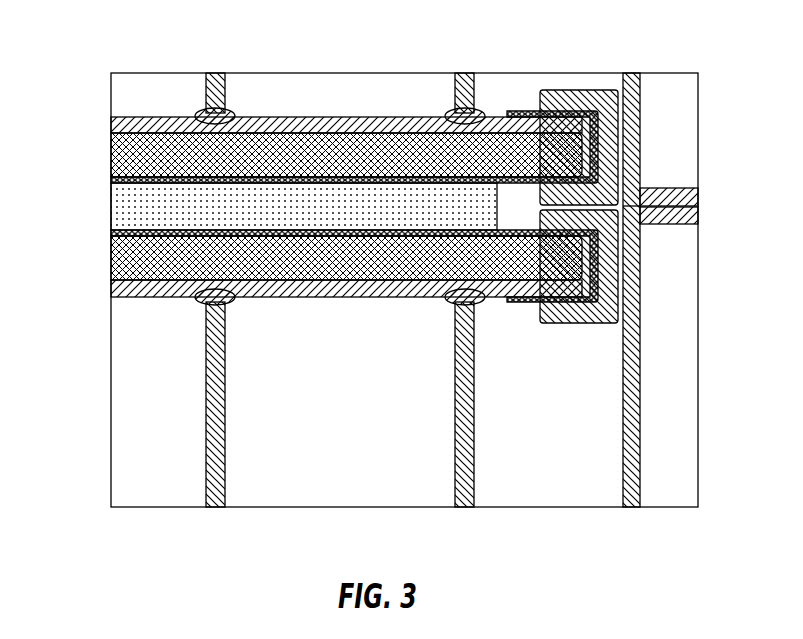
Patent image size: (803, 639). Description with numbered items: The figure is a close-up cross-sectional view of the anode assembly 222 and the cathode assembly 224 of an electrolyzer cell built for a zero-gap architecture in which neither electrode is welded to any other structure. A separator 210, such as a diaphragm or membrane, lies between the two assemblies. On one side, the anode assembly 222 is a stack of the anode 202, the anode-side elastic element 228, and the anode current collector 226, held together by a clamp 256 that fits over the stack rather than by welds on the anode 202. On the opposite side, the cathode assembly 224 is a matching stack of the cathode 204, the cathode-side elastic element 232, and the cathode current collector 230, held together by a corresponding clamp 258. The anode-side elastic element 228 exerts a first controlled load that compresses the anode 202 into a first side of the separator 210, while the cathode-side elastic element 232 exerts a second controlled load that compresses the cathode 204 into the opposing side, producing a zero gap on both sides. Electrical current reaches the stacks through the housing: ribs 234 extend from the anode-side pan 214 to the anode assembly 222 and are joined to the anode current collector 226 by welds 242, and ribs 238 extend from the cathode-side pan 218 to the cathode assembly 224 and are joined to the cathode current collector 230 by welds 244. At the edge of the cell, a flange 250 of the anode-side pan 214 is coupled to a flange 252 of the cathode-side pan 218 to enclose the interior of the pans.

The anode 202 is at (362, 170).
The cathode 204 is at (340, 237).
The separator 210 is at (112, 210).
The anode-side pan 214 is at (633, 88).
The cathode-side pan 218 is at (622, 446).
The anode assembly 222 is at (322, 131).
The cathode assembly 224 is at (322, 297).
The anode current collector 226 is at (166, 127).
The anode-side elastic element 228 is at (405, 150).
The cathode current collector 230 is at (143, 288).
The cathode-side elastic element 232 is at (283, 258).
The ribs 234 is at (203, 106).
The ribs 238 is at (465, 440).
The welds 242 is at (228, 108).
The welds 244 is at (225, 306).
The flange 250 is at (672, 187).
The flange 252 is at (665, 222).
The clamp 256 is at (608, 143).
The clamp 258 is at (608, 298).